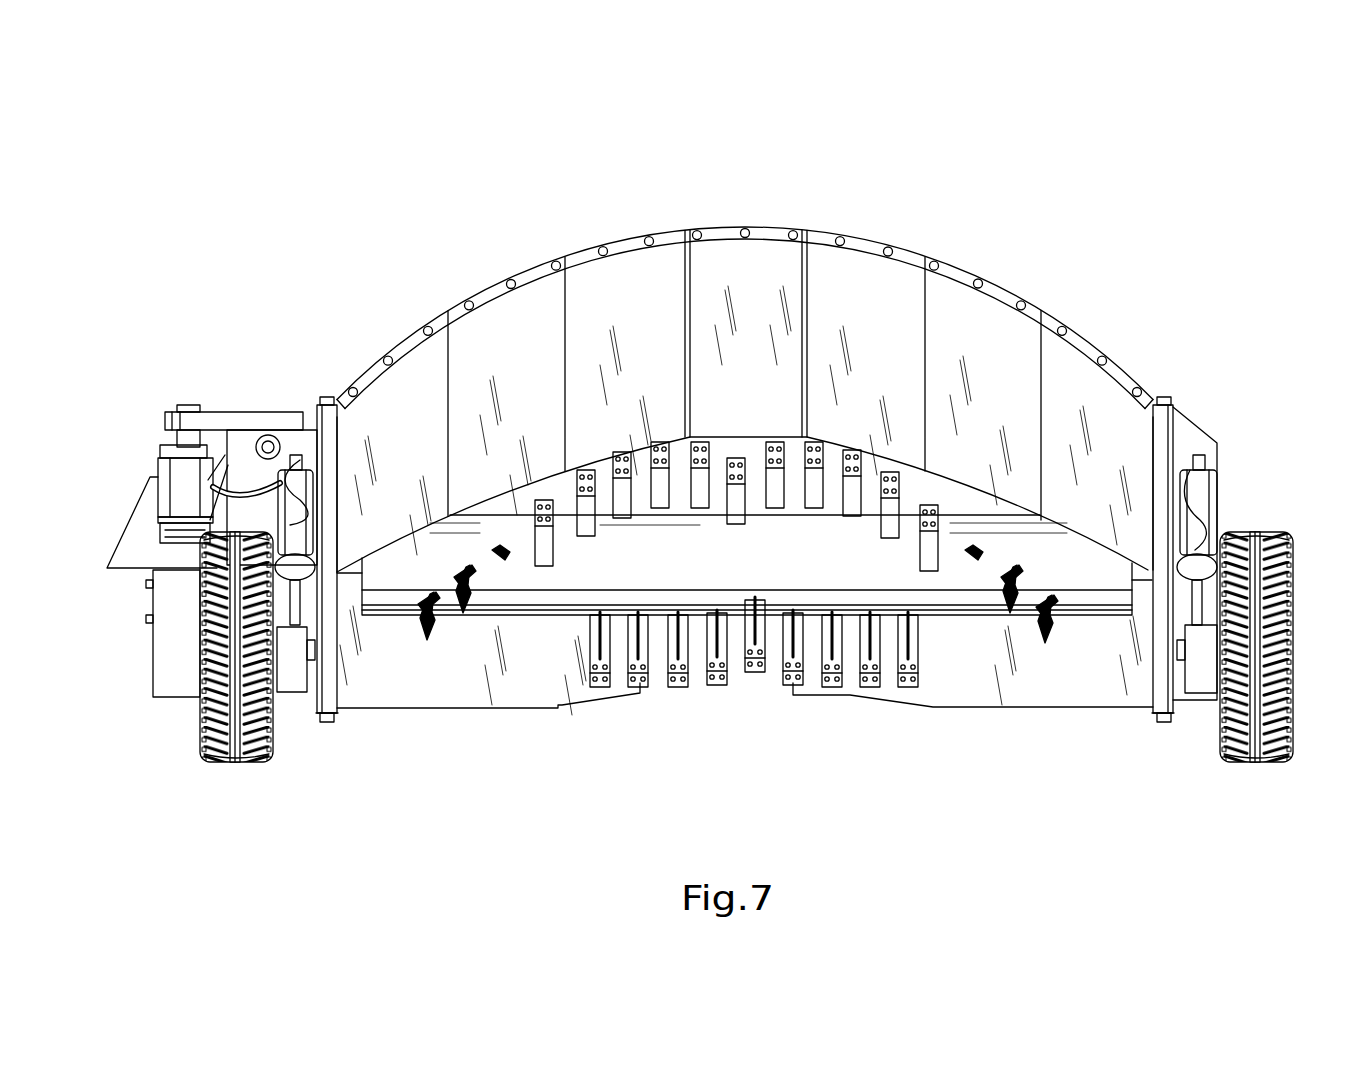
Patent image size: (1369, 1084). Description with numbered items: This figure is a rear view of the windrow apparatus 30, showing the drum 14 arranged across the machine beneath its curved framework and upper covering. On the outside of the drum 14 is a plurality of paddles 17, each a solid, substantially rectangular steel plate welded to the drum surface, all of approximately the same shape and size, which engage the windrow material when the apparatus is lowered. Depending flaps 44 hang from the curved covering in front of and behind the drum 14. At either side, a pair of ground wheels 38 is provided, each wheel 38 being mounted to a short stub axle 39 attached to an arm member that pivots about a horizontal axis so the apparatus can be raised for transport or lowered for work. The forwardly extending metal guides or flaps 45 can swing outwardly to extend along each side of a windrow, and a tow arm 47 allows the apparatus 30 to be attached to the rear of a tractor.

The apparatus 30 is at (1158, 263).
The depending flaps 44 is at (420, 363).
The tow arm 47 is at (207, 385).
The drum 14 is at (523, 617).
The forwardly extending metal guides or flaps 45 is at (468, 693).
The paddles 17 is at (418, 600).
The stub axle 39 is at (287, 697).
The ground wheels 38 is at (253, 762).